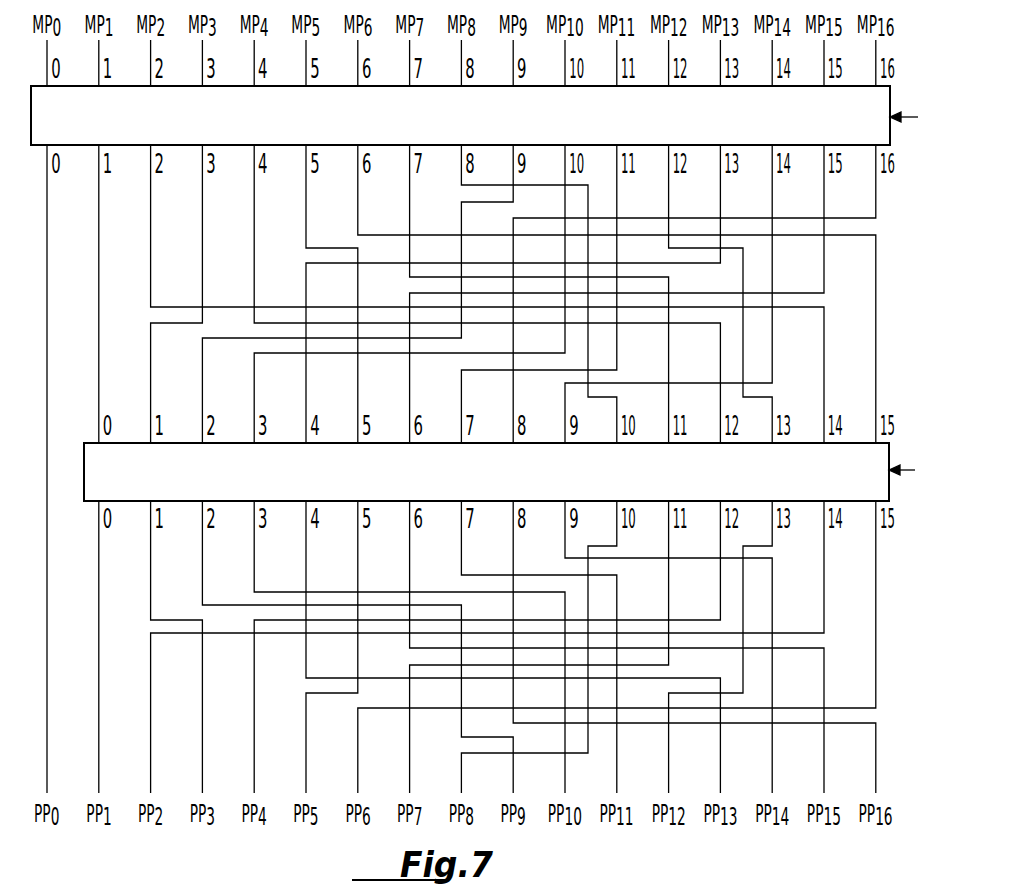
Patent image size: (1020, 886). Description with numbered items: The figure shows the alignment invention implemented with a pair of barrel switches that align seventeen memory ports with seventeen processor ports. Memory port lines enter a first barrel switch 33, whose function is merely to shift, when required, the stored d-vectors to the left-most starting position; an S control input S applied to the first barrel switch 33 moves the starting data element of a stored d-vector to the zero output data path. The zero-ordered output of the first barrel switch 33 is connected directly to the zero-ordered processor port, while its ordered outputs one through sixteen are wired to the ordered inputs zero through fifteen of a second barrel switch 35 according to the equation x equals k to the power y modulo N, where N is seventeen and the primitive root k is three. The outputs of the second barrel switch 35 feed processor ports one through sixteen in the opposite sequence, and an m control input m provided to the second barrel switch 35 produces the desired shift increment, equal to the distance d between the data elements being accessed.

The first barrel switch 33 is at (28, 138).
The second barrel switch 35 is at (84, 447).
The S control input S is at (910, 117).
The m control input m is at (913, 470).